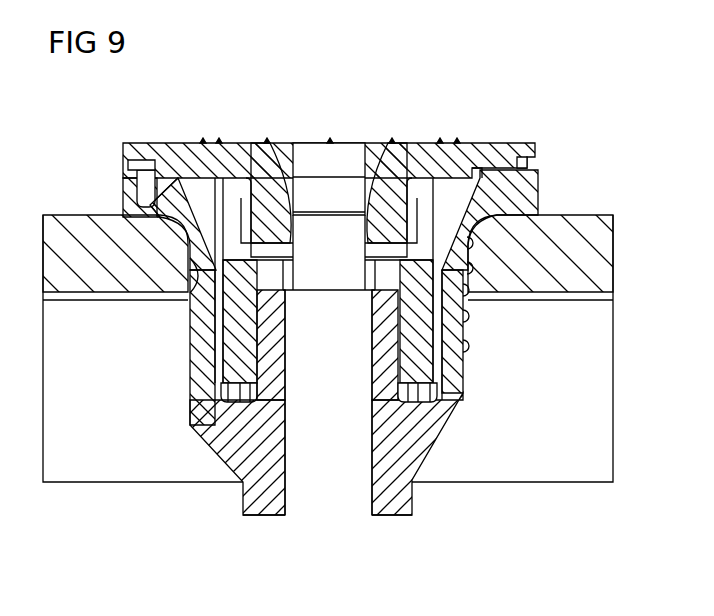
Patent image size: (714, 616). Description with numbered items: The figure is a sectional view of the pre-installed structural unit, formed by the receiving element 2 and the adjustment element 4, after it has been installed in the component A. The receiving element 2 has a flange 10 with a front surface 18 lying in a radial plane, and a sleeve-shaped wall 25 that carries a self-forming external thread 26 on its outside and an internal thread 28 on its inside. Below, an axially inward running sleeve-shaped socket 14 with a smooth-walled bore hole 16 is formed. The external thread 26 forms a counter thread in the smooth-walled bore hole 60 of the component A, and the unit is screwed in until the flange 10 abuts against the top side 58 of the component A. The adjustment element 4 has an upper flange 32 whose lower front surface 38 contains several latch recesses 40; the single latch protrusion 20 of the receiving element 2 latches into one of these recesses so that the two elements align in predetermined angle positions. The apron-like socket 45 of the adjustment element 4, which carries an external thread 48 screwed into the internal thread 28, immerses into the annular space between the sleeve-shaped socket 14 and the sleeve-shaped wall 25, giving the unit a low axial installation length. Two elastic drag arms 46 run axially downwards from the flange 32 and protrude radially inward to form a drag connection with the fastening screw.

The receiving element 2 is at (401, 516).
The adjustment element 4 is at (405, 143).
The flange 10 is at (537, 170).
The sleeve-shaped socket 14 is at (385, 345).
The smooth-walled bore hole 16 is at (290, 460).
The front surface 18 is at (505, 143).
The latch protrusion 20 is at (123, 180).
The sleeve-shaped wall 25 is at (200, 352).
The external thread 26 is at (470, 322).
The internal thread 28 is at (427, 337).
The flange 32 is at (172, 142).
The front surface 38 is at (497, 143).
The latch recesses 40 is at (157, 141).
The apron-like socket 45 is at (230, 378).
The drag arms 46 is at (436, 224).
The external thread 48 is at (469, 313).
The top side 58 is at (598, 214).
The smooth-walled bore hole 60 is at (187, 292).
The component A is at (606, 270).